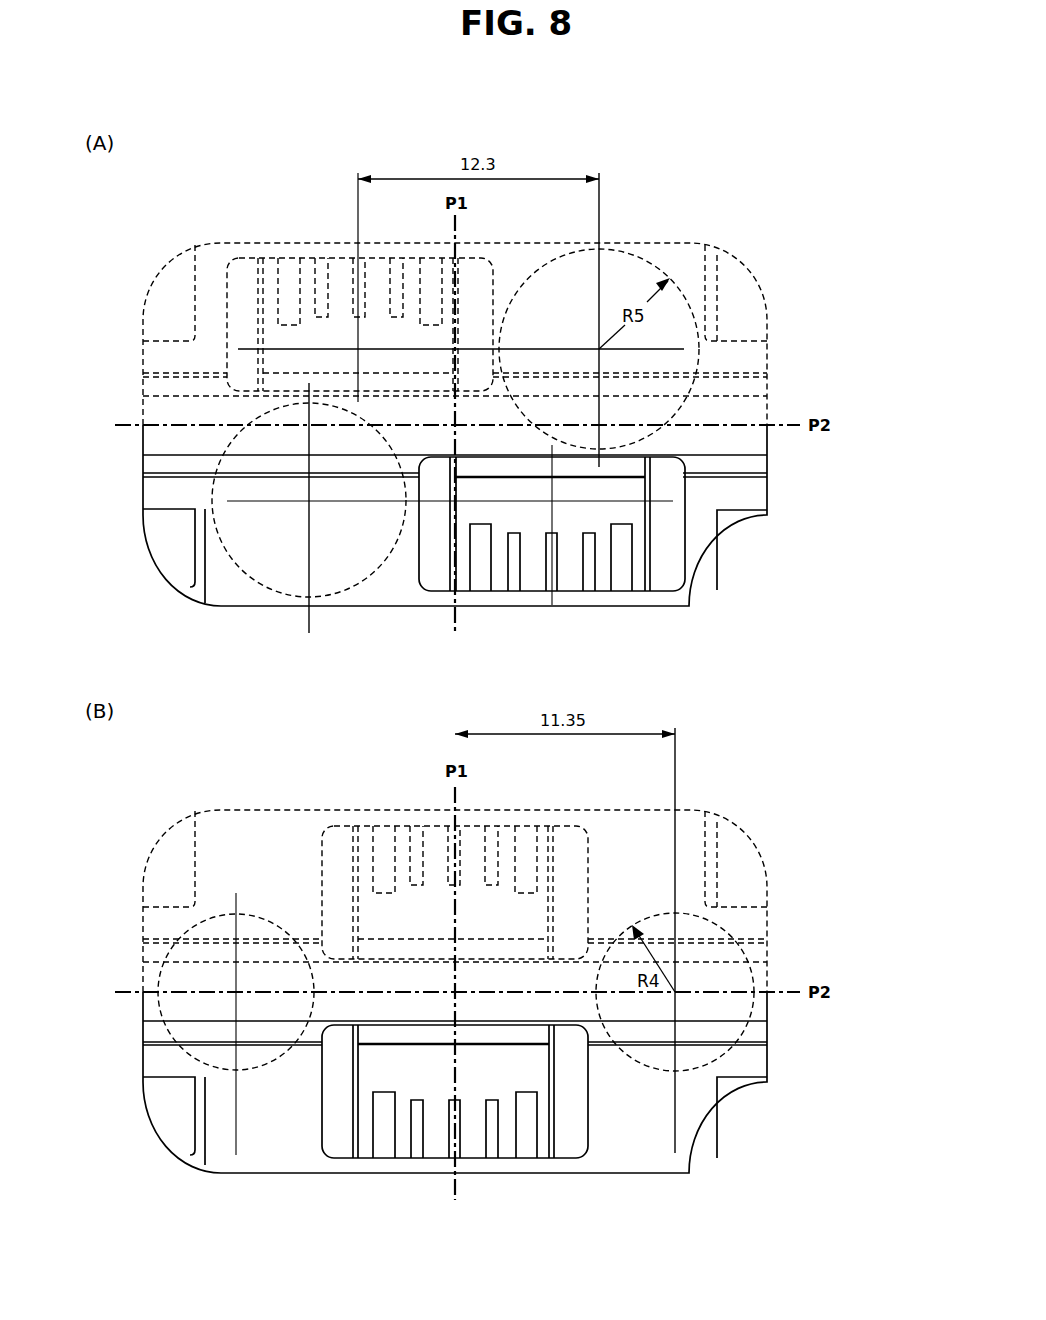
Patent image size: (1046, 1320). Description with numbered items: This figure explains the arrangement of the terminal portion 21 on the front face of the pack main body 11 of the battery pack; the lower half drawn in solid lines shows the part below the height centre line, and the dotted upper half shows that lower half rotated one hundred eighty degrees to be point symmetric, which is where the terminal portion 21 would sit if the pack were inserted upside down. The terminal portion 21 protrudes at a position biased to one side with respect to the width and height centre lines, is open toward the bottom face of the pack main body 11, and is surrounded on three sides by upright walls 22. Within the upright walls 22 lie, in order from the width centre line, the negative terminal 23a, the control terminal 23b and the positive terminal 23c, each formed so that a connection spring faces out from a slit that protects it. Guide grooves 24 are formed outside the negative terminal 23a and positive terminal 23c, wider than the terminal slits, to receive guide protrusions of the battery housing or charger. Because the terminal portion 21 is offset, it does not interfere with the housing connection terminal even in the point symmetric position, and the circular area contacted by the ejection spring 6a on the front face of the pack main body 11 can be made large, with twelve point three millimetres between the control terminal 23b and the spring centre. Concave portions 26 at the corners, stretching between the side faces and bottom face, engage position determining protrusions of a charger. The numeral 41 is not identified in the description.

The pack main body 11 is at (136, 467).
The housing body (alternate designation) 41 is at (406, 836).
The concave portion 26 is at (170, 552).
The ejection spring 6a is at (258, 590).
The terminal portion 21 is at (407, 578).
The upright wall 22 is at (437, 582).
The guide groove 24 is at (480, 580).
The negative terminal 23a is at (512, 583).
The control terminal 23b is at (547, 582).
The positive terminal 23c is at (592, 580).